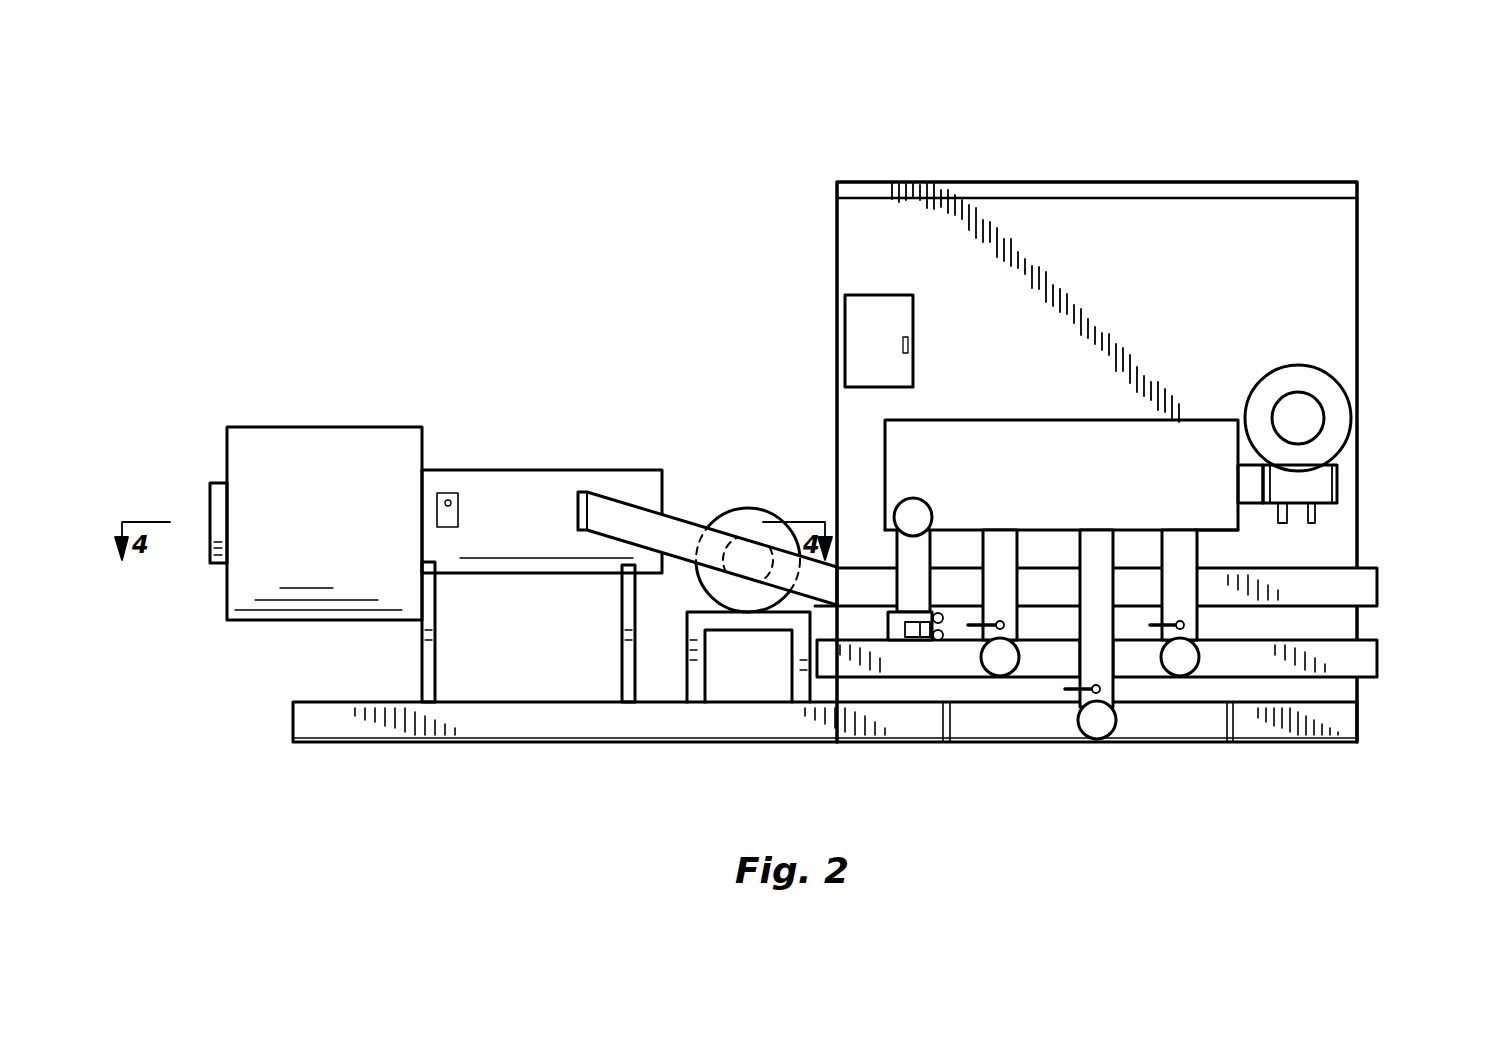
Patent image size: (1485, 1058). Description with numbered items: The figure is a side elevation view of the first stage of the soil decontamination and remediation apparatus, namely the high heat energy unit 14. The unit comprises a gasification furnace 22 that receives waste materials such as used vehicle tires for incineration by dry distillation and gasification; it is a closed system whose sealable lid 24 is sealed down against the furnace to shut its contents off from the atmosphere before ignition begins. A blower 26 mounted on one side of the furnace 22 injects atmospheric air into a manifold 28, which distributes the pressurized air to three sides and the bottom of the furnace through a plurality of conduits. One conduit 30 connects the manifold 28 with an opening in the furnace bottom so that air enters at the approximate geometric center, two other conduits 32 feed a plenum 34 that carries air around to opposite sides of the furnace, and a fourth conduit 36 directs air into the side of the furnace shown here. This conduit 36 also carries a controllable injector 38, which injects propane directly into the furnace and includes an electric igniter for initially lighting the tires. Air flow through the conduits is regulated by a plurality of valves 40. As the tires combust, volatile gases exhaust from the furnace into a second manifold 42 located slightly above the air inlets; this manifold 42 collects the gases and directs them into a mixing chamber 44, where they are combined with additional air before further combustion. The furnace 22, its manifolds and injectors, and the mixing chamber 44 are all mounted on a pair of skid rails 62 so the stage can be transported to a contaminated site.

The high heat energy unit 14 is at (1364, 151).
The gasification furnace 22 is at (1362, 307).
The sealable lid 24 is at (980, 190).
The blower 26 is at (1310, 486).
The manifold 28 is at (1066, 490).
The conduit 30 is at (1100, 632).
The conduits 32 is at (1000, 563).
The plenum 34 is at (1355, 658).
The fourth conduit 36 is at (915, 553).
The controllable injector 38 is at (921, 655).
The valves 40 is at (982, 630).
The second manifold 42 is at (1305, 588).
The mixing chamber 44 is at (492, 497).
The skid rails 62 is at (537, 720).